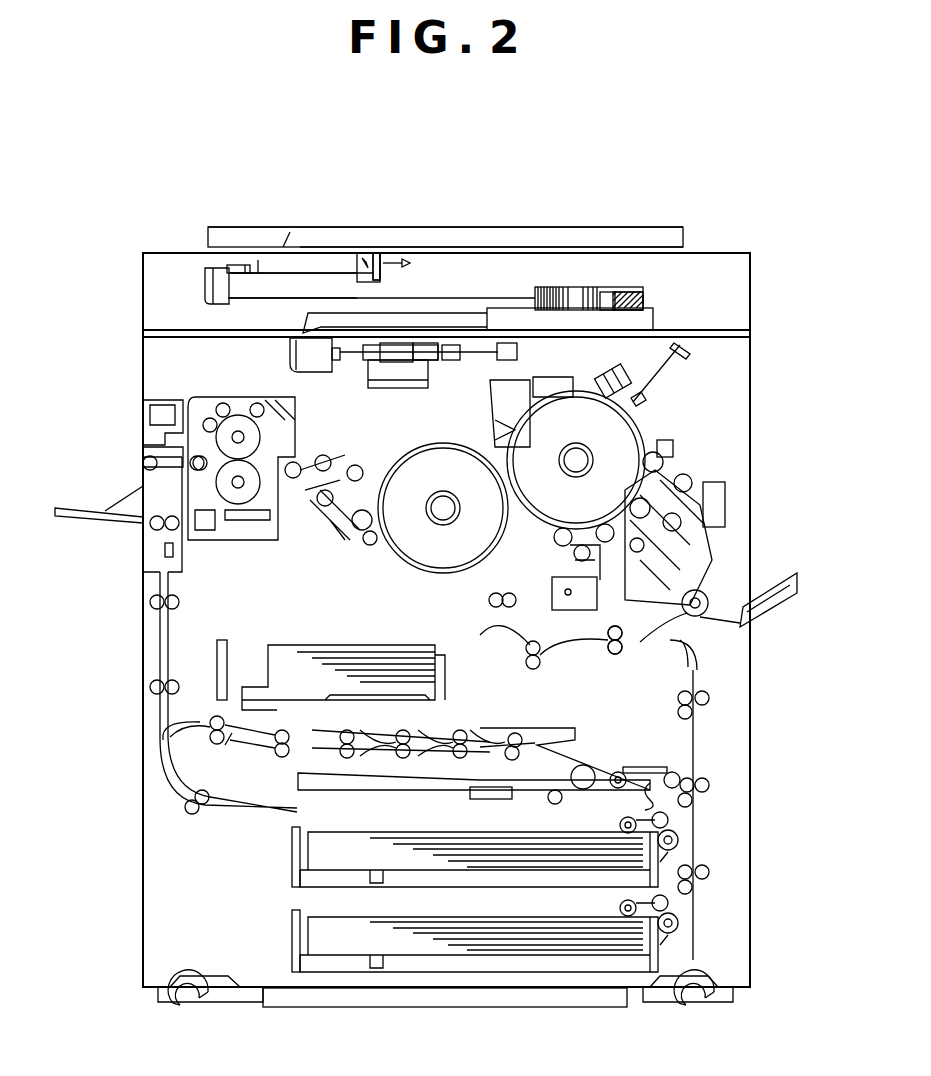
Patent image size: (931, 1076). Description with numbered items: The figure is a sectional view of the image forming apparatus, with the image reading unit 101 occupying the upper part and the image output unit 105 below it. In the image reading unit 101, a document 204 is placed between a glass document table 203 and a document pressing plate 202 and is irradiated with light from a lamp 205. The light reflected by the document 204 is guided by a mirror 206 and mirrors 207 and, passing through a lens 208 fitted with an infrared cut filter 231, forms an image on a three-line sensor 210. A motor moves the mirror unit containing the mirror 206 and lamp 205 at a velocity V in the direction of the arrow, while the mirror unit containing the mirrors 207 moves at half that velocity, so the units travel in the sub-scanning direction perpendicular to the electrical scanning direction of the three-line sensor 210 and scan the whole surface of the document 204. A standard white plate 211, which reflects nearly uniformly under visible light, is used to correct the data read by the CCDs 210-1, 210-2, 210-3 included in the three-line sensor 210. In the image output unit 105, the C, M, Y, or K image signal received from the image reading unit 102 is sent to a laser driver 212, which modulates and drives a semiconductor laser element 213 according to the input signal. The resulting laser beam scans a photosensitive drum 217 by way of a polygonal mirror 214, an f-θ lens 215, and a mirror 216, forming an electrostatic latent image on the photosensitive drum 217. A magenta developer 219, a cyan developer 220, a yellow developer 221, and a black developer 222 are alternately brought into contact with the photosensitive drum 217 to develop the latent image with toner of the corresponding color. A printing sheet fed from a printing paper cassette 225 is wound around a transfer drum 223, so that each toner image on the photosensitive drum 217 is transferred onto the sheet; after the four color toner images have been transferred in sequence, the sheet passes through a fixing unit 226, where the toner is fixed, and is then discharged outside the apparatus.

The image reading unit 101 is at (832, 307).
The image reading unit 102 is at (643, 320).
The image output unit 105 is at (832, 542).
The document pressing plate 202 is at (508, 227).
The glass document table 203 is at (587, 247).
The document 204 is at (458, 247).
The lamp 205 is at (368, 257).
The mirror 206 is at (377, 257).
The mirrors 207 is at (203, 293).
The lens 208 is at (622, 293).
The 3-line sensor 210 is at (557, 287).
The CCD 210-1 is at (645, 292).
The CCD 210-2 is at (645, 300).
The CCD 210-3 is at (645, 306).
The standard white plate 211 is at (256, 250).
The laser driver 212 is at (290, 350).
The semiconductor laser element 213 is at (340, 360).
The polygonal mirror 214 is at (430, 362).
The f-θ lens 215 is at (517, 355).
The mirror 216 is at (690, 357).
The photosensitive drum 217 is at (643, 433).
The magenta developer 219 is at (597, 575).
The cyan developer 220 is at (668, 500).
The yellow developer 221 is at (680, 457).
The black developer 222 is at (558, 533).
The transfer drum 223 is at (403, 567).
The printing paper cassette 225 is at (633, 963).
The fixing unit 226 is at (237, 545).
The infrared cut filter 231 is at (545, 287).